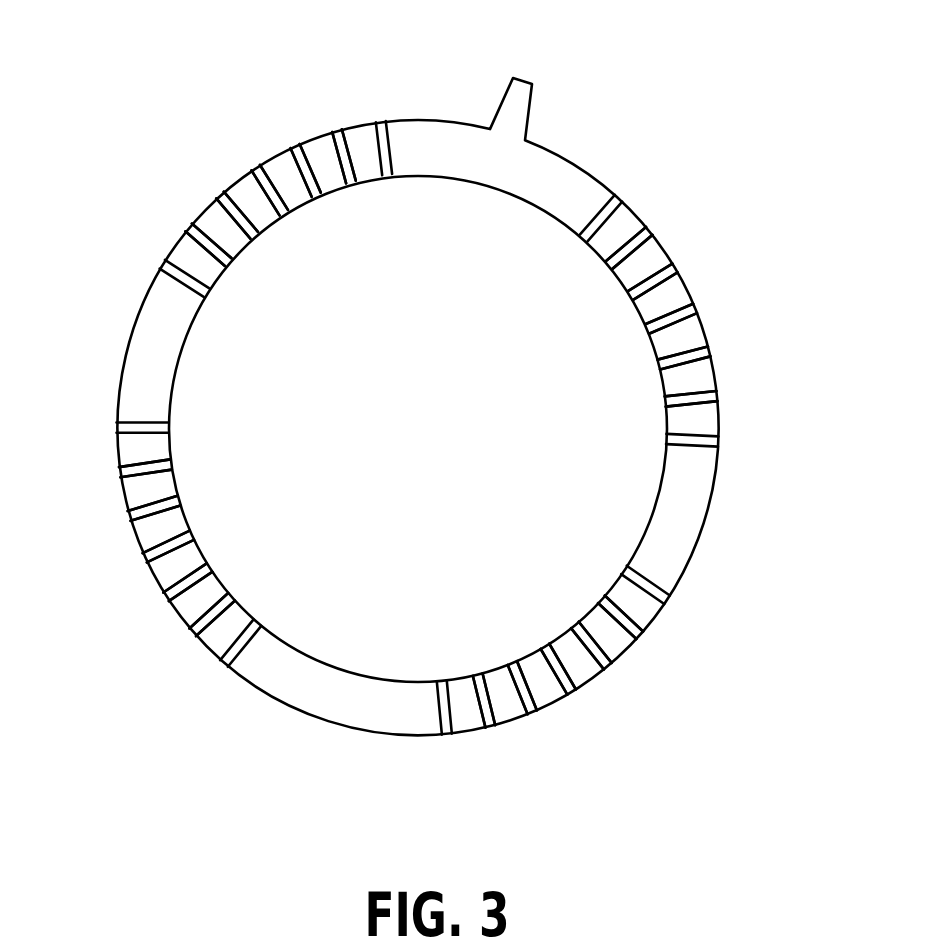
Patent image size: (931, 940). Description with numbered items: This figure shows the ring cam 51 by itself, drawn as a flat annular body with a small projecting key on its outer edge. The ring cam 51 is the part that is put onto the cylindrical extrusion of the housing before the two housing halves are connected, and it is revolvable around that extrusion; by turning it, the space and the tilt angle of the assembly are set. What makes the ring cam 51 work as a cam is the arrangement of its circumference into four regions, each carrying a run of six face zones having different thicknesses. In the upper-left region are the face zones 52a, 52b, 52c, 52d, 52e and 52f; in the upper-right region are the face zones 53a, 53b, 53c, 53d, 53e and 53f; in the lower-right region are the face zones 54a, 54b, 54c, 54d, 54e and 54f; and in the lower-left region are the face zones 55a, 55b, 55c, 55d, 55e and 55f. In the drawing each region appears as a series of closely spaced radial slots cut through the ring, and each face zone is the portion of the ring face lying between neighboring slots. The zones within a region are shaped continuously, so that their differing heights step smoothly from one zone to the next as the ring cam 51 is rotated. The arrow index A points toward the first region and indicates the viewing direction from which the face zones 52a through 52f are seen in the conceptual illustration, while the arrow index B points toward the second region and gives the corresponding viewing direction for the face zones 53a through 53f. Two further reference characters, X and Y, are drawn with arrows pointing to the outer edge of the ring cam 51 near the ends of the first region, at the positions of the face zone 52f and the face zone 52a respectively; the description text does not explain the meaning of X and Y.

The ring cam 51 is at (573, 167).
The face zone 52a is at (188, 252).
The face zone 52b is at (218, 222).
The face zone 52c is at (250, 197).
The face zone 52d is at (285, 174).
The face zone 52e is at (324, 158).
The face zone 52f is at (364, 142).
The face zone 53a is at (620, 227).
The face zone 53b is at (650, 263).
The face zone 53c is at (672, 297).
The face zone 53d is at (688, 334).
The face zone 53e is at (698, 375).
The face zone 53f is at (700, 417).
The face zone 54a is at (647, 606).
The face zone 54b is at (623, 638).
The face zone 54c is at (587, 665).
The face zone 54d is at (548, 685).
The face zone 54e is at (512, 703).
The face zone 54f is at (473, 712).
The face zone 55a is at (222, 635).
The face zone 55b is at (195, 610).
The face zone 55c is at (170, 563).
The face zone 55d is at (153, 528).
The face zone 55e is at (138, 490).
The face zone 55f is at (135, 450).
The arrow index A is at (230, 112).
The arrow index B is at (758, 282).
The position X is at (382, 121).
The position Y is at (177, 260).